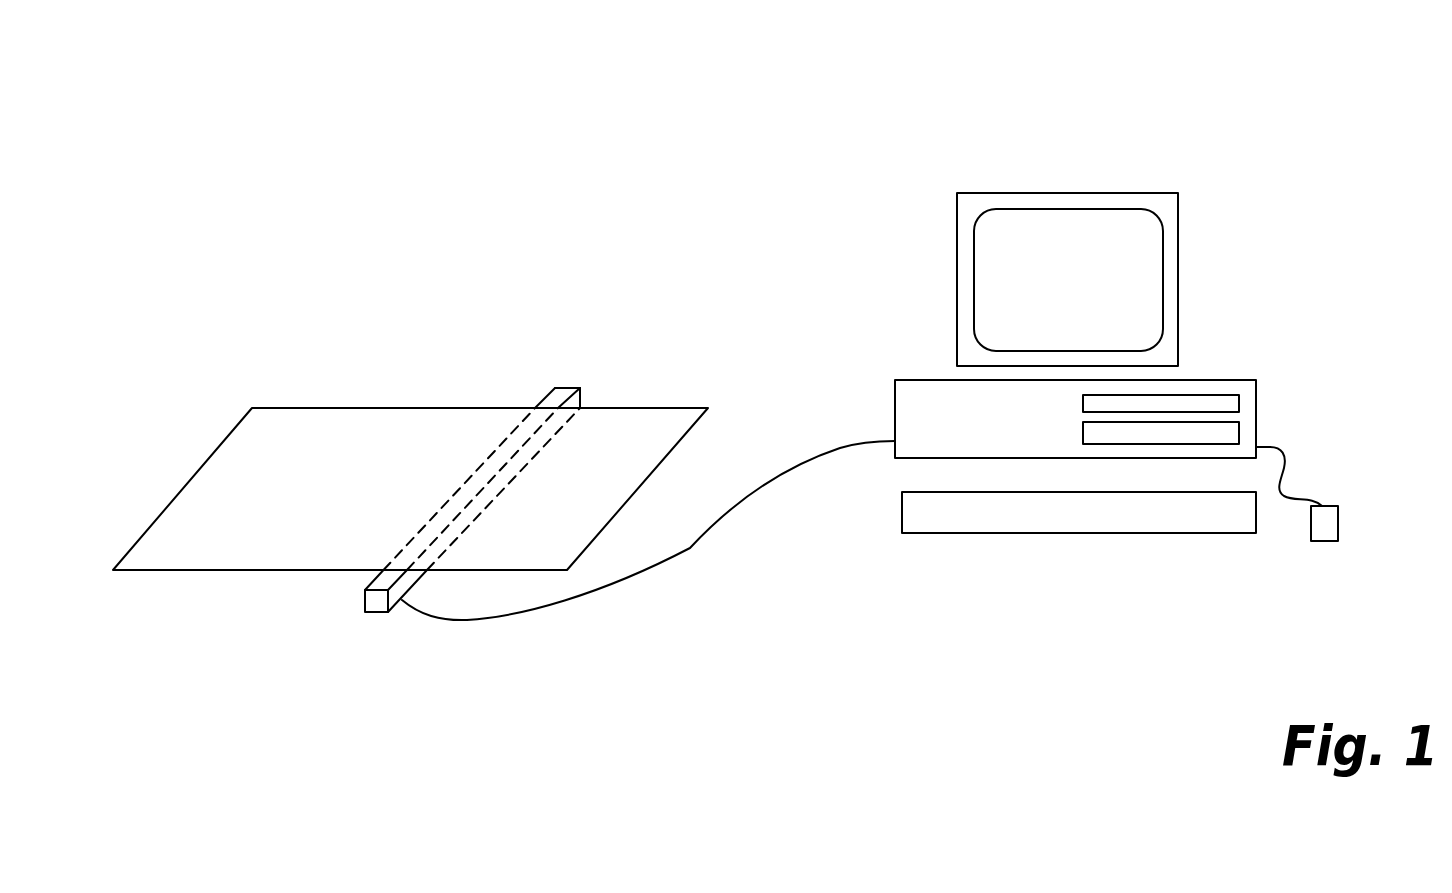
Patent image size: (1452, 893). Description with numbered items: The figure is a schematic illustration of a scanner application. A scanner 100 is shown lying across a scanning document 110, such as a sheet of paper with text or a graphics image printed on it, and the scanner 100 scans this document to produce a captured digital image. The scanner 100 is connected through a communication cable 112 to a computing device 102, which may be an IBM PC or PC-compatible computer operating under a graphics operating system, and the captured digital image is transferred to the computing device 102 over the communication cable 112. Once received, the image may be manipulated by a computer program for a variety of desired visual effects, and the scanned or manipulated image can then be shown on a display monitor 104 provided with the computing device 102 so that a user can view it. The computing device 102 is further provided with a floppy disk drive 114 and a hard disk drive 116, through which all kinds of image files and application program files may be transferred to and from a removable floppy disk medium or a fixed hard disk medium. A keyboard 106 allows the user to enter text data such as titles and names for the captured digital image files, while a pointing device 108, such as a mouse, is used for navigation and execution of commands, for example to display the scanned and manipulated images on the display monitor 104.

The scanner 100 is at (373, 607).
The computing device 102 is at (1112, 302).
The display monitor 104 is at (1060, 221).
The keyboard 106 is at (917, 522).
The pointing device 108 is at (1333, 515).
The scanning document 110 is at (285, 425).
The communication cable 112 is at (645, 588).
The floppy disk drive 114 is at (1239, 400).
The hard disk drive 116 is at (1239, 432).